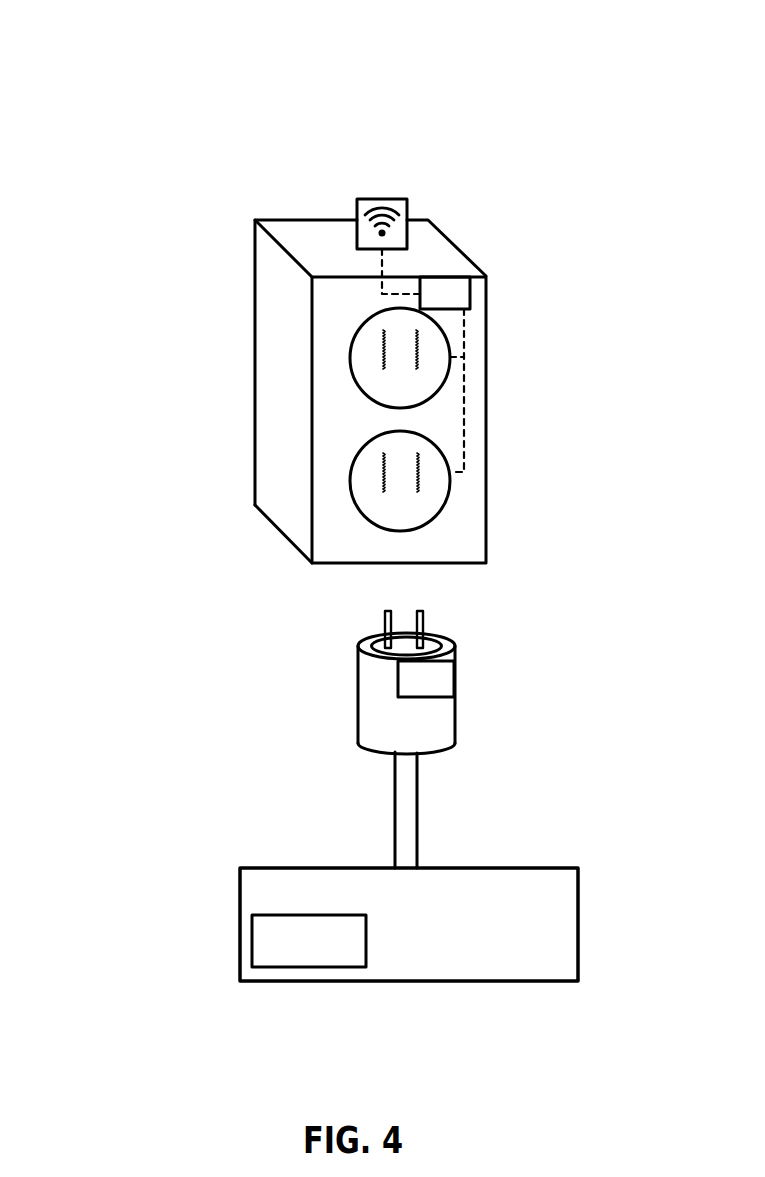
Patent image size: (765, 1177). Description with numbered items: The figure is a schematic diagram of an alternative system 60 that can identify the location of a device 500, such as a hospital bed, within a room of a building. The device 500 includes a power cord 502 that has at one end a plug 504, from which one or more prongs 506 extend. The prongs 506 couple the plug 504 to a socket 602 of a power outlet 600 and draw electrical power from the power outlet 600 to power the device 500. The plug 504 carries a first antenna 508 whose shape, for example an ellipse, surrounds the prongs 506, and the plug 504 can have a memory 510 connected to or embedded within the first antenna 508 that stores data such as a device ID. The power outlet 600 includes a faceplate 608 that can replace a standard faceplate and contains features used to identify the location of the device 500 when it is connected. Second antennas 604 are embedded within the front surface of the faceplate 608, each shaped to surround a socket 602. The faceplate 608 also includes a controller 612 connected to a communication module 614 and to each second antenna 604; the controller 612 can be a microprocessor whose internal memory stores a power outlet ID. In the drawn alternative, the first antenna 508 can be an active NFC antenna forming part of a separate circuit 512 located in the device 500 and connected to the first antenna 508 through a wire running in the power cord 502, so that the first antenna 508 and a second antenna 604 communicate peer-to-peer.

The system 60 is at (118, 84).
The power outlet 600 is at (304, 225).
The faceplate 608 is at (336, 294).
The socket 602 is at (368, 336).
The second antenna 604 is at (350, 358).
The controller 612 is at (445, 374).
The communication module 614 is at (407, 231).
The plug 504 is at (373, 713).
The first antenna 508 is at (360, 649).
The prongs 506 is at (424, 627).
The memory 510 is at (426, 679).
The power cord 502 is at (418, 827).
The device 500 is at (551, 930).
The separate circuit 512 is at (268, 943).